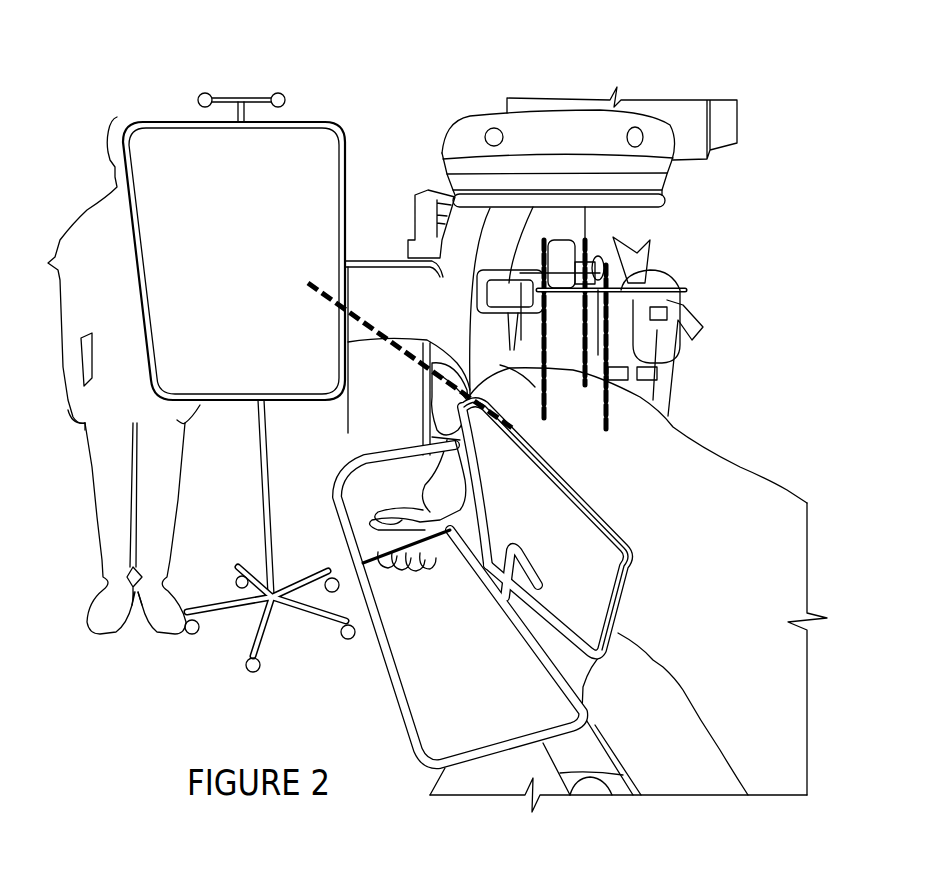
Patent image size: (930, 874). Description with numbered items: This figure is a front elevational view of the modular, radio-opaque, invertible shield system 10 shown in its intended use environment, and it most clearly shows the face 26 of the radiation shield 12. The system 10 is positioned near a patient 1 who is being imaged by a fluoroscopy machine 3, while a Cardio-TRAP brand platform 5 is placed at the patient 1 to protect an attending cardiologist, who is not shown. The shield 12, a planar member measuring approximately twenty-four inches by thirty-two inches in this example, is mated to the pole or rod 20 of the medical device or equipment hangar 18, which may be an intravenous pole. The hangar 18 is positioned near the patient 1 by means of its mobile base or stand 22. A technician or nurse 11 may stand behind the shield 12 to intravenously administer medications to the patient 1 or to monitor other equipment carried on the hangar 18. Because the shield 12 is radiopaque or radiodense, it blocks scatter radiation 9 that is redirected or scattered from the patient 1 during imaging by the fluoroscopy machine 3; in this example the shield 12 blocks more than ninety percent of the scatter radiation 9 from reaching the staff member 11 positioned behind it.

The patient 1 is at (641, 484).
The fluoroscopy machine 3 is at (582, 145).
The Cardio-TRAP brand platform 5 is at (383, 492).
The scatter radiation 9 is at (387, 335).
The shield system 10 is at (115, 101).
The technician or nurse 11 is at (126, 294).
The radiation shield 12 is at (234, 238).
The medical device or equipment hangar 18 is at (249, 488).
The pole or rod 20 is at (253, 112).
The base or stand 22 is at (228, 629).
The face of the shield 26 is at (254, 271).